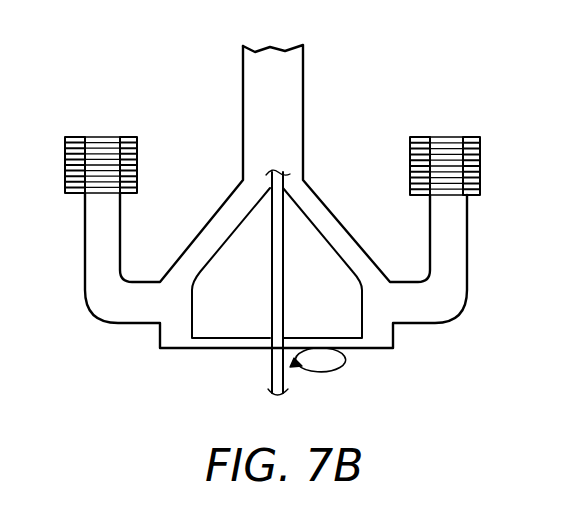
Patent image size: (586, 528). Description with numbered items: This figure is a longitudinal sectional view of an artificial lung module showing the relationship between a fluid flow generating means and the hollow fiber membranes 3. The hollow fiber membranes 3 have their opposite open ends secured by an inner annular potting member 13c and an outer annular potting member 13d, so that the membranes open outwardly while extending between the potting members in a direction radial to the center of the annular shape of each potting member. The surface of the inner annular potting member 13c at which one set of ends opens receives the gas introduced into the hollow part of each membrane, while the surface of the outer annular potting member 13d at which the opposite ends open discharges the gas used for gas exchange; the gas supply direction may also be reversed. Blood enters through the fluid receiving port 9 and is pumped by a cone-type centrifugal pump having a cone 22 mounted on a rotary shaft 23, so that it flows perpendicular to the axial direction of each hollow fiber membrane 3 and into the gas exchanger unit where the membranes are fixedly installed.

The fluid receiving port 9 is at (292, 45).
The hollow fiber membranes 3 is at (98, 137).
The inner annular potting member 13c is at (125, 197).
The outer annular potting member 13d is at (73, 196).
The cone 22 is at (345, 327).
The rotary shaft 23 is at (262, 362).